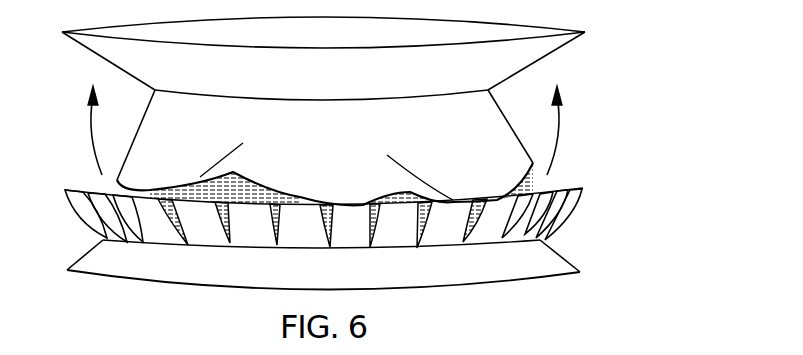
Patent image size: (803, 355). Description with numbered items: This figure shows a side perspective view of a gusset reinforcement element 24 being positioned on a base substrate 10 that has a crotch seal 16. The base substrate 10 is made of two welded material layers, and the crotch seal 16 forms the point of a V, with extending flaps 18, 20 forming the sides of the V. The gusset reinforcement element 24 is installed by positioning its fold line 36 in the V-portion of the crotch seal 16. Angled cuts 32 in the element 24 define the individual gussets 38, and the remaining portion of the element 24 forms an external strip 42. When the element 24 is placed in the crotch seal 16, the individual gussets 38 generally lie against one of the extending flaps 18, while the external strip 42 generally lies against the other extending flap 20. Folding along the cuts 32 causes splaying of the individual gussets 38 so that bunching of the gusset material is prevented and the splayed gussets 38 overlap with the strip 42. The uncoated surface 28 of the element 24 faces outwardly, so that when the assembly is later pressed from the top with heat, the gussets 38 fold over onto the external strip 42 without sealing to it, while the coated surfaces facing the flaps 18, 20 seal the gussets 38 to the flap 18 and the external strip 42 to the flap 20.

The base substrate 10 is at (645, 102).
The crotch seal 16 is at (488, 92).
The extending flap 18 is at (306, 89).
The extending flap 20 is at (306, 154).
The gusset reinforcement element 24 is at (640, 240).
The uncoated surface 28 is at (90, 260).
The cuts 32 is at (173, 233).
The fold line 36 is at (137, 247).
The individual gussets 38 is at (530, 223).
The external strip 42 is at (580, 272).